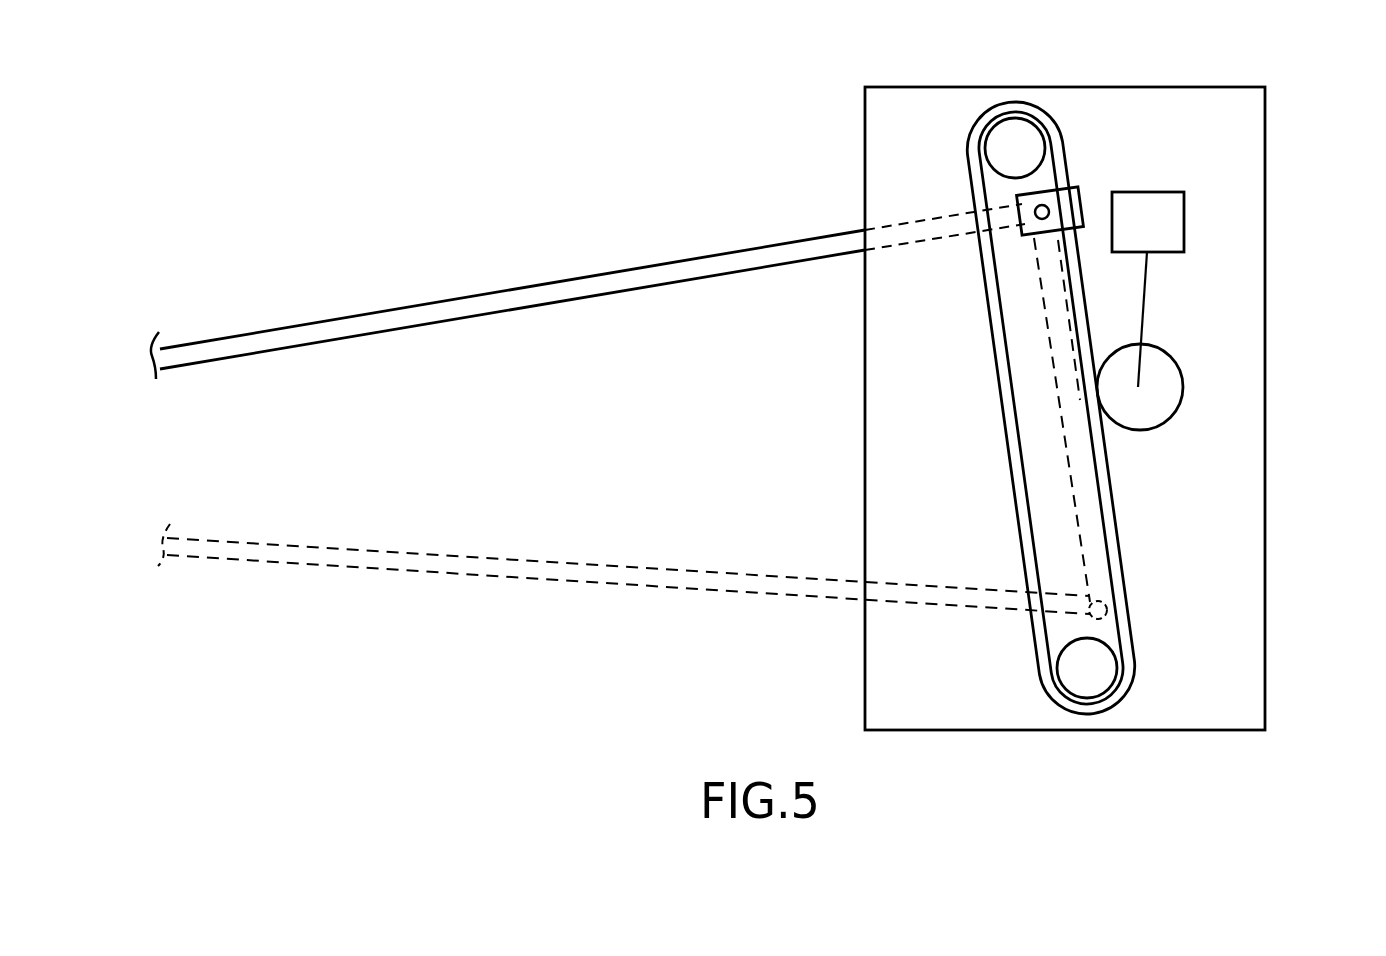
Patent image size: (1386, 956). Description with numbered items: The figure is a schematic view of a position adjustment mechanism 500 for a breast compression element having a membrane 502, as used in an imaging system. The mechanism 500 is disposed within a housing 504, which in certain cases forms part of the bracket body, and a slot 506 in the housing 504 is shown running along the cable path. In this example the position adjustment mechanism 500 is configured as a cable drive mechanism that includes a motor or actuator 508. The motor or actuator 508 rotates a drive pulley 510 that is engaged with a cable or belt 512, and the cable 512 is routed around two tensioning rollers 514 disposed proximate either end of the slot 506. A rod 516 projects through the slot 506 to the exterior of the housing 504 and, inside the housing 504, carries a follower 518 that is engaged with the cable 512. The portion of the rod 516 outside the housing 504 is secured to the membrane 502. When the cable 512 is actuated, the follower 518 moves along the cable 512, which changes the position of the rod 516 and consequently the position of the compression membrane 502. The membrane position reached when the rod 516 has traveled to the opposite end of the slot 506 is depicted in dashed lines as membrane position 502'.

The position adjustment mechanism 500 is at (1308, 142).
The membrane 502 is at (588, 291).
The membrane in moved position 502' is at (624, 556).
The housing 504 is at (1267, 478).
The slot 506 is at (1046, 357).
The motor or actuator 508 is at (1185, 213).
The drive pulley 510 is at (1165, 407).
The cable or belt 512 is at (1113, 568).
The tensioning rollers 514 is at (1023, 142).
The rod 516 is at (1042, 205).
The follower 518 is at (1035, 219).